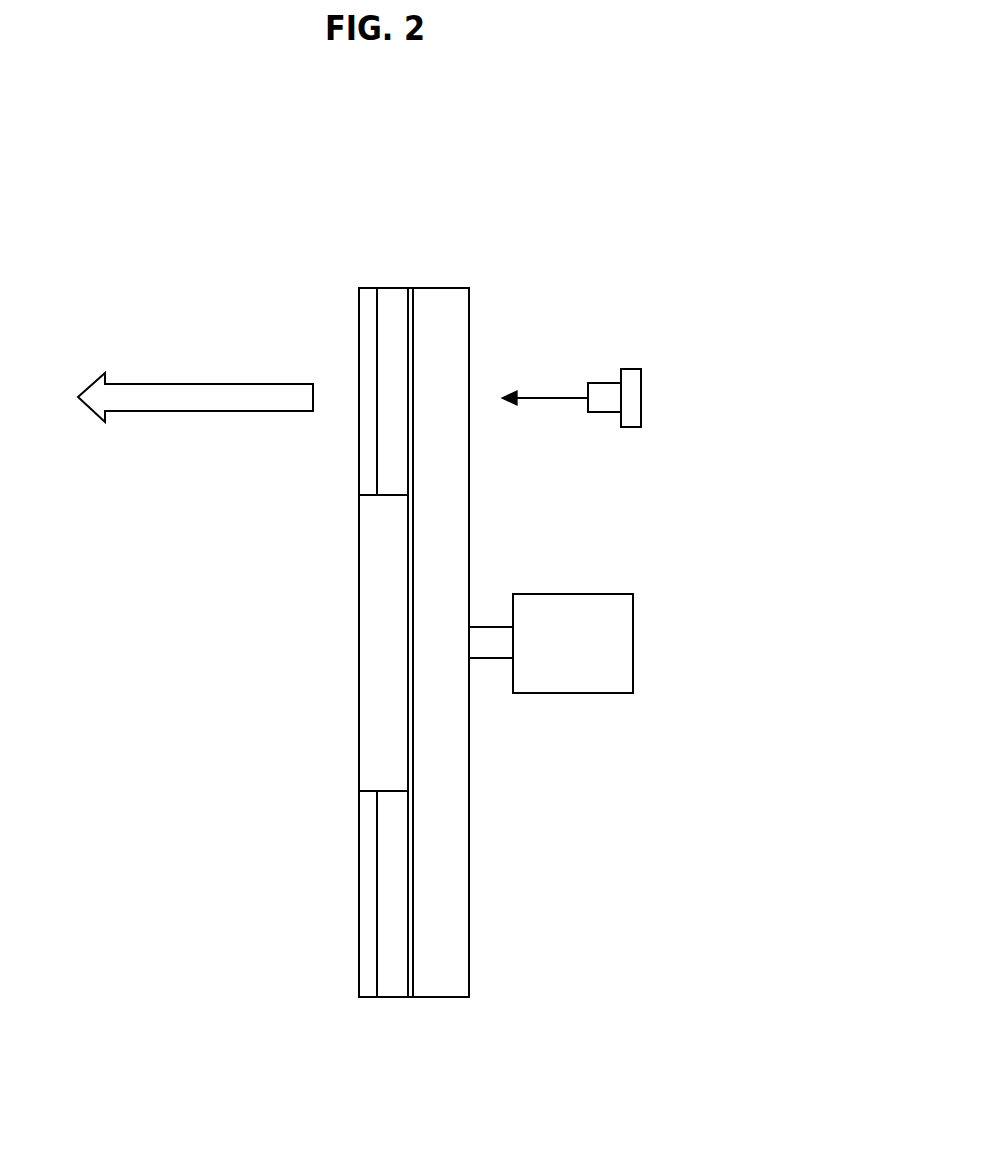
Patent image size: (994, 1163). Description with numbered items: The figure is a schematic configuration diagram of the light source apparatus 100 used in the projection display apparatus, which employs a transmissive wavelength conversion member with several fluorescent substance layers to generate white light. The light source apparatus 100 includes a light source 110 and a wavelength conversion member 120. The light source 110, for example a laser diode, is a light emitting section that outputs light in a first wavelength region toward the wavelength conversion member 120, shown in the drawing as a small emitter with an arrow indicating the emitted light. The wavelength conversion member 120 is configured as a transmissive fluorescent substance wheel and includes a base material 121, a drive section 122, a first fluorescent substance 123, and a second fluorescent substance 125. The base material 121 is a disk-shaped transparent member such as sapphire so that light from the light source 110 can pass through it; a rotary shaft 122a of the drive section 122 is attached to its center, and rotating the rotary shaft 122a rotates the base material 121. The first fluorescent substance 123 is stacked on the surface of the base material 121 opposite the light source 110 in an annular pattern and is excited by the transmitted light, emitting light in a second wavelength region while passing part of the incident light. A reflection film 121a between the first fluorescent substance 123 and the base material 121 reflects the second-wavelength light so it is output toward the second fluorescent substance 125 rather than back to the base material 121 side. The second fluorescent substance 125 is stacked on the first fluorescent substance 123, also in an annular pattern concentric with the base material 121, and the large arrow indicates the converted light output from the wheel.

The light source apparatus 100 is at (602, 215).
The light source 110 is at (633, 368).
The wavelength conversion member 120 is at (413, 270).
The base material 121 is at (445, 988).
The reflection film 121a is at (408, 987).
The drive section 122 is at (588, 695).
The rotary shaft 122a is at (492, 660).
The first fluorescent substance 123 is at (392, 987).
The second fluorescent substance 125 is at (363, 990).